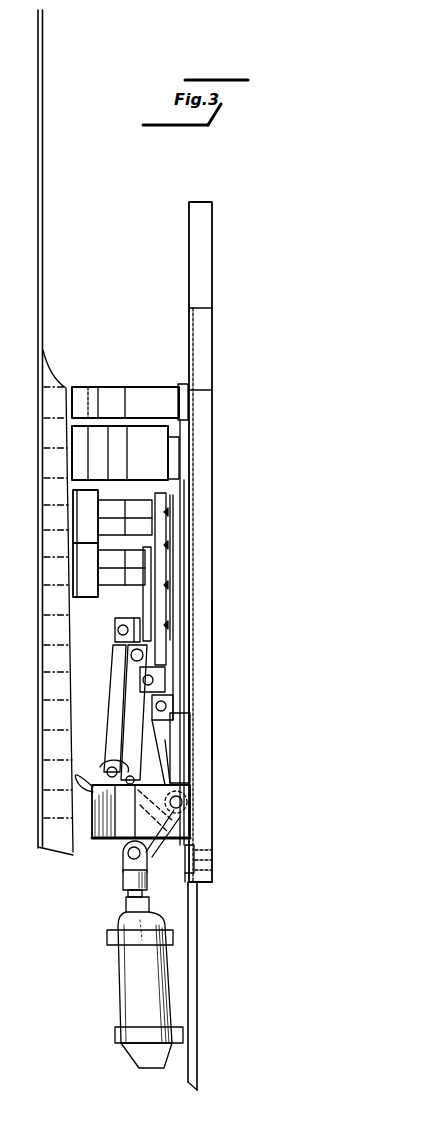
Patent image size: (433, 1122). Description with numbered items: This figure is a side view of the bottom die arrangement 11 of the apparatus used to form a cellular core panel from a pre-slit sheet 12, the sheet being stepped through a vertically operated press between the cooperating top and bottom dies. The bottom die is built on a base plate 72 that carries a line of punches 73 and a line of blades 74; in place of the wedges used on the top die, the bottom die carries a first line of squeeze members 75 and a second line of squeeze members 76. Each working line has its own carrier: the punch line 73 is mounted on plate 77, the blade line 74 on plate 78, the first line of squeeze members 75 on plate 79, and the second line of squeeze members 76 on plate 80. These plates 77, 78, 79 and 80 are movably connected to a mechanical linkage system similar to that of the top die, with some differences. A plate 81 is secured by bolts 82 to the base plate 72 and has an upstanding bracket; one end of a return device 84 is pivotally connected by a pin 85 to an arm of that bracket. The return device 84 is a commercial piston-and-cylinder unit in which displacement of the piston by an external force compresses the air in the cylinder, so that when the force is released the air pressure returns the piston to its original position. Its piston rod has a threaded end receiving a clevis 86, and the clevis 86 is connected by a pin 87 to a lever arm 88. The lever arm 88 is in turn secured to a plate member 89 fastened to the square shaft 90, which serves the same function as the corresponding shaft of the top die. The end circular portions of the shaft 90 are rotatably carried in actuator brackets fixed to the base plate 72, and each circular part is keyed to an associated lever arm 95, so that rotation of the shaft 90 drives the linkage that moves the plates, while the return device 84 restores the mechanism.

The bottom die arrangement 11 is at (186, 272).
The pre-slit sheet 12 is at (46, 82).
The base plate 72 is at (213, 686).
The line of punches 73 is at (92, 384).
The line of blades 74 is at (100, 460).
The first line of squeeze members 75 is at (74, 497).
The second line of squeeze members 76 is at (80, 598).
The plate 77 is at (184, 394).
The plate 78 is at (182, 450).
The plate 79 is at (161, 497).
The plate 80 is at (150, 604).
The plate 81 is at (198, 967).
The bolts 82 is at (214, 860).
The return device 84 is at (132, 963).
The pin 85 is at (150, 903).
The clevis 86 is at (127, 888).
The pin 87 is at (127, 853).
The lever arm 88 is at (168, 842).
The plate member 89 is at (78, 783).
The square shaft 90 is at (110, 766).
The lever arm 95 is at (182, 790).